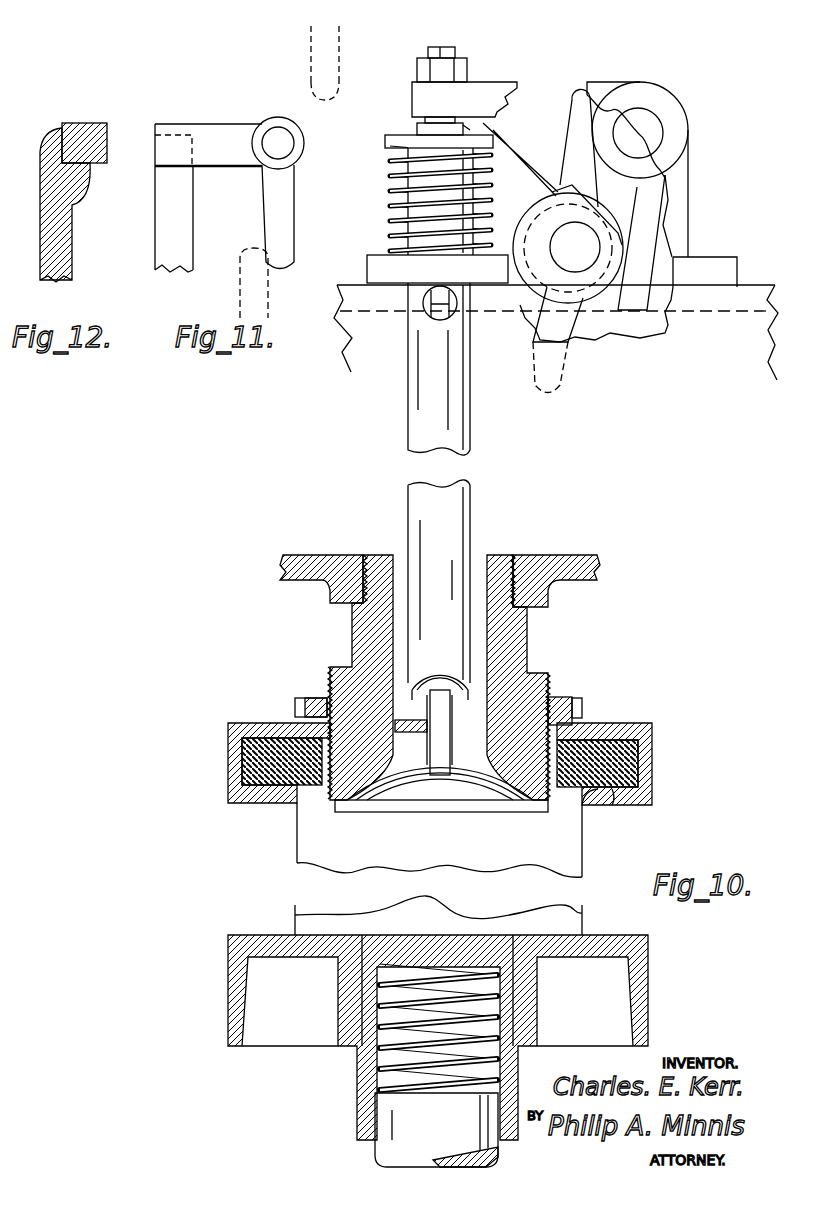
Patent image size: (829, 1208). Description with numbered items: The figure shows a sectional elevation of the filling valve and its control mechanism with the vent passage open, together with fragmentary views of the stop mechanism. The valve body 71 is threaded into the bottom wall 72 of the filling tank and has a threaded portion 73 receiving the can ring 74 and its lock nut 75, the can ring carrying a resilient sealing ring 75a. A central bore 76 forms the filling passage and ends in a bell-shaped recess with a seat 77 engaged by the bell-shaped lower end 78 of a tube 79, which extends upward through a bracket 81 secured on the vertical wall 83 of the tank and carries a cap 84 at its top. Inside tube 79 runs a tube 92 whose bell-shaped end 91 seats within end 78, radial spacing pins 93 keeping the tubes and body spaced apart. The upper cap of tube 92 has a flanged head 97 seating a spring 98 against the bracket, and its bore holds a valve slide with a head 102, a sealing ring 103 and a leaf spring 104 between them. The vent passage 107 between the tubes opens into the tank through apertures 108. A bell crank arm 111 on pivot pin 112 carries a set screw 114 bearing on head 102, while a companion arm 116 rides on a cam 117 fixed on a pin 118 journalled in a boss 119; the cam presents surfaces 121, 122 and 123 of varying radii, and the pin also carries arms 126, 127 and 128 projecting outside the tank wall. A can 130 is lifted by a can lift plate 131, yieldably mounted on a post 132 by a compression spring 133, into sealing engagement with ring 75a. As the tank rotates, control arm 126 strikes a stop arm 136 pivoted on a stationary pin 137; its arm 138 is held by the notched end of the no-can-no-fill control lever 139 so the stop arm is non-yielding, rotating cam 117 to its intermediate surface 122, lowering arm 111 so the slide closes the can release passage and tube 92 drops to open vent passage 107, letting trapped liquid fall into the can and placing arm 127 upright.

In FIG. 10, the valve body 71 is at (500, 560).
In FIG. 10, the bottom wall 72 is at (580, 558).
In FIG. 10, the threaded portion 73 is at (553, 692).
In FIG. 10, the can ring 74 is at (655, 741).
In FIG. 10, the lock nut 75 is at (585, 708).
In FIG. 10, the sealing ring 75a is at (610, 795).
In FIG. 10, the central bore 76 is at (478, 562).
In FIG. 10, the seat 77 is at (530, 808).
In FIG. 10, the bell-shaped lower end 78 is at (347, 803).
In FIG. 10, the tube 79 is at (472, 438).
In FIG. 10, the bracket 81 is at (376, 268).
In FIG. 10, the vertical wall 83 is at (357, 338).
In FIG. 10, the cap 84 is at (402, 172).
In FIG. 10, the bell-shaped end 91 is at (450, 790).
In FIG. 10, the tube 92 is at (468, 688).
In FIG. 10, the radial spacing pins 93 is at (395, 722).
In FIG. 10, the flanged head 97 is at (388, 143).
In FIG. 10, the spring 98 is at (395, 214).
In FIG. 10, the head 102 is at (420, 128).
In FIG. 10, the sealing ring 103 is at (470, 131).
In FIG. 10, the leaf spring 104 is at (458, 124).
In FIG. 10, the vent passage 107 is at (393, 693).
In FIG. 10, the apertures 108 is at (424, 304).
In FIG. 10, the arm 111 is at (430, 100).
In FIG. 10, the pivot pin 112 is at (656, 136).
In FIG. 10, the set screw 114 is at (457, 54).
In FIG. 10, the arm 116 is at (637, 293).
In FIG. 10, the cam 117 is at (524, 262).
In FIG. 10, the pin 118 is at (590, 257).
In FIG. 10, the boss 119 is at (623, 243).
In FIG. 10, the cam surface 121 is at (620, 230).
In FIG. 10, the cam surface 122 is at (600, 305).
In FIG. 10, the cam surface 123 is at (558, 317).
In FIG. 11, the control arm 126 is at (242, 263).
In FIG. 10, the control arm 126 is at (534, 176).
In FIG. 10, the arm 127 is at (588, 182).
In FIG. 10, the arm 128 is at (562, 380).
In FIG. 10, the can 130 is at (340, 923).
In FIG. 10, the can lift plate 131 is at (228, 962).
In FIG. 10, the post 132 is at (383, 1150).
In FIG. 10, the compression spring 133 is at (373, 1050).
In FIG. 11, the stop arm 136 is at (268, 226).
In FIG. 10, the stop arm 136 is at (310, 64).
In FIG. 11, the stationary pin 137 is at (292, 142).
In FIG. 12, the arm 138 is at (85, 123).
In FIG. 11, the arm 138 is at (218, 128).
In FIG. 12, the no-can-no-fill control lever 139 is at (160, 200).